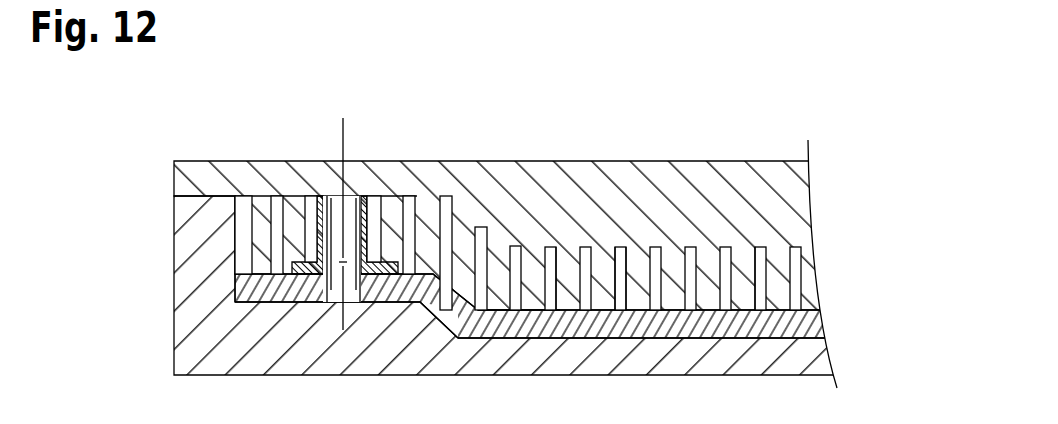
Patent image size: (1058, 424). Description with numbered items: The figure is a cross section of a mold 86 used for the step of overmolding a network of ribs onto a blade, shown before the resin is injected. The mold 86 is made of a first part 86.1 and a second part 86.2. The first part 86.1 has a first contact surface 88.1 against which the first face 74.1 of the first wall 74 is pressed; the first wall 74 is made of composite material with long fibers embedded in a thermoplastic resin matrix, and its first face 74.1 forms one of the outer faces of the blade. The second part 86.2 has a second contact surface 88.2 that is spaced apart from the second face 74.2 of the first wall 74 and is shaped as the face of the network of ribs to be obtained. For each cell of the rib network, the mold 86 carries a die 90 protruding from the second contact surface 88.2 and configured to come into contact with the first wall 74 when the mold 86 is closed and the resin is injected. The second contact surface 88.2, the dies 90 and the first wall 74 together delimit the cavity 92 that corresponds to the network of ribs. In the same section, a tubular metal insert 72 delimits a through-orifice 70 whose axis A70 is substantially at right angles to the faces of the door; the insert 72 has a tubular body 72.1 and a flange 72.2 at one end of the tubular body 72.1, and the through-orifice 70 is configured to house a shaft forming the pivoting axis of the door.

The through-orifice 70 is at (334, 195).
The axis of the through-orifice A70 is at (344, 156).
The tubular metal insert 72 is at (377, 186).
The tubular body 72.1 is at (373, 222).
The flange 72.2 is at (303, 287).
The first wall 74 is at (654, 367).
The first face of the first wall 74.1 is at (690, 338).
The second face of the first wall 74.2 is at (737, 297).
The mold 86 is at (450, 263).
The first part of the mold 86.1 is at (190, 347).
The second part of the mold 86.2 is at (200, 178).
The first contact surface 88.1 is at (481, 322).
The second contact surface 88.2 is at (632, 257).
The die 90 is at (597, 267).
The cavity 92 is at (482, 252).